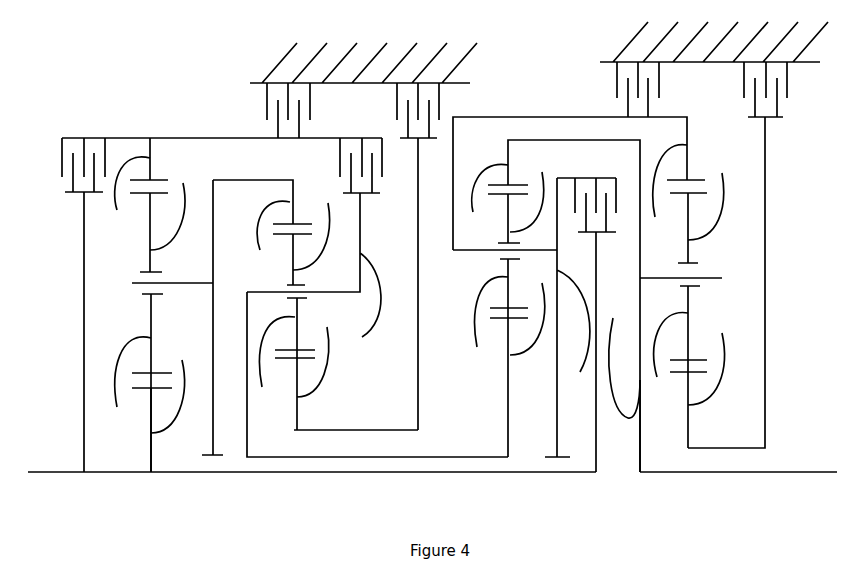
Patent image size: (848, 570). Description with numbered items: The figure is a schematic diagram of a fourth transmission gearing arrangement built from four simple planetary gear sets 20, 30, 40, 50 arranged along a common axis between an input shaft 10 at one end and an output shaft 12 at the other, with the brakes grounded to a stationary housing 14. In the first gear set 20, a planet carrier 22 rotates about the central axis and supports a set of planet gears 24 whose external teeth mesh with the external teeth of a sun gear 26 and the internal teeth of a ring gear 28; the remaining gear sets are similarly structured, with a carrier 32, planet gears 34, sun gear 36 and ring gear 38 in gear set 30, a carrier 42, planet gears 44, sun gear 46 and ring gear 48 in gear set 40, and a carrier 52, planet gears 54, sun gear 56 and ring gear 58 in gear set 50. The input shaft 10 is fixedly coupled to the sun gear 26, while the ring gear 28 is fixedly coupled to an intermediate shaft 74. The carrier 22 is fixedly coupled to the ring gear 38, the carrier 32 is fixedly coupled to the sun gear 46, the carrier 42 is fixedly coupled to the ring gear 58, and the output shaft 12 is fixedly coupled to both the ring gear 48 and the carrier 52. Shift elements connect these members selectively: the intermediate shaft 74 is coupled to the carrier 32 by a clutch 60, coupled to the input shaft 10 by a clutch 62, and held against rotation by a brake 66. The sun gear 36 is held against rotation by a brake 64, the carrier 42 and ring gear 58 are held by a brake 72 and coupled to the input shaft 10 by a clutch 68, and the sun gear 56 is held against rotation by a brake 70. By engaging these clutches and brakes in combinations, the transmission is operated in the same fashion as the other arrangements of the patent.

The input shaft 10 is at (42, 472).
The output shaft 12 is at (808, 472).
The stationary housing 14 is at (282, 55).
The first planetary gear set 20 is at (149, 449).
The planet carrier 22 is at (215, 278).
The planet gears 24 is at (161, 286).
The sun gear 26 is at (164, 383).
The ring gear 28 is at (147, 203).
The second planetary gear set 30 is at (351, 469).
The planet carrier 32 is at (314, 273).
The planet gears 34 is at (294, 298).
The sun gear 36 is at (305, 364).
The ring gear 38 is at (283, 243).
The third planetary gear set 40 is at (381, 400).
The planet carrier 42 is at (579, 352).
The planet gears 44 is at (508, 303).
The sun gear 46 is at (559, 317).
The ring gear 48 is at (498, 203).
The fourth planetary gear set 50 is at (670, 444).
The planet carrier 52 is at (624, 358).
The planet gears 54 is at (686, 278).
The sun gear 56 is at (699, 367).
The ring gear 58 is at (681, 211).
The clutch 60 is at (377, 133).
The clutch 62 is at (98, 137).
The brake 64 is at (440, 105).
The brake 66 is at (267, 100).
The clutch 68 is at (575, 178).
The brake 70 is at (788, 78).
The brake 72 is at (617, 80).
The intermediate shaft 74 is at (218, 138).